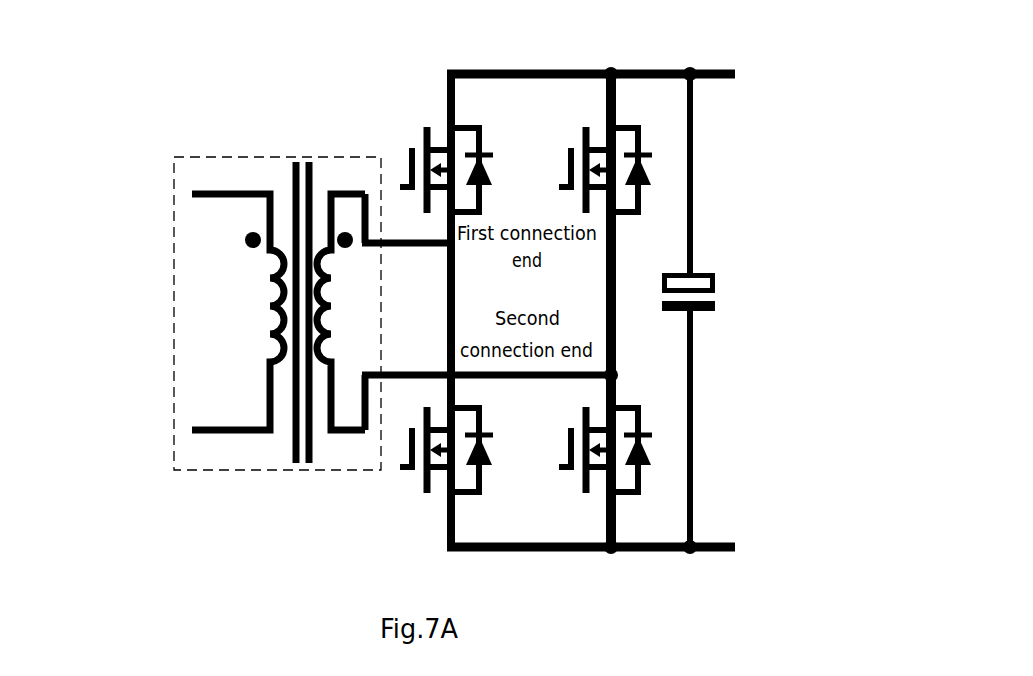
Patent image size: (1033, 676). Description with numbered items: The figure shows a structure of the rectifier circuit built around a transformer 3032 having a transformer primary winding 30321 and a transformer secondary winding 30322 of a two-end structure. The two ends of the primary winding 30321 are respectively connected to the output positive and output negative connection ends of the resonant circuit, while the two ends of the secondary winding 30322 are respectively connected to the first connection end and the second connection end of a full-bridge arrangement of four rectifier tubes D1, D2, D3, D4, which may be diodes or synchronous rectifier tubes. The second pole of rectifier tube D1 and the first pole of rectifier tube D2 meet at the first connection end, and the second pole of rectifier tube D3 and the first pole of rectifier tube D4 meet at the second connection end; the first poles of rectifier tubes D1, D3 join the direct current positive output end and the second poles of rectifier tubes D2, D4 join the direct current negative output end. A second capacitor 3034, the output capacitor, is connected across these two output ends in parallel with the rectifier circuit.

The transformer 3032 is at (226, 282).
The transformer primary winding 30321 is at (252, 287).
The transformer secondary winding 30322 is at (357, 433).
The second capacitor 3034 is at (715, 285).
The rectifier tube D1 is at (472, 170).
The rectifier tube D2 is at (471, 450).
The rectifier tube D3 is at (623, 170).
The rectifier tube D4 is at (625, 450).